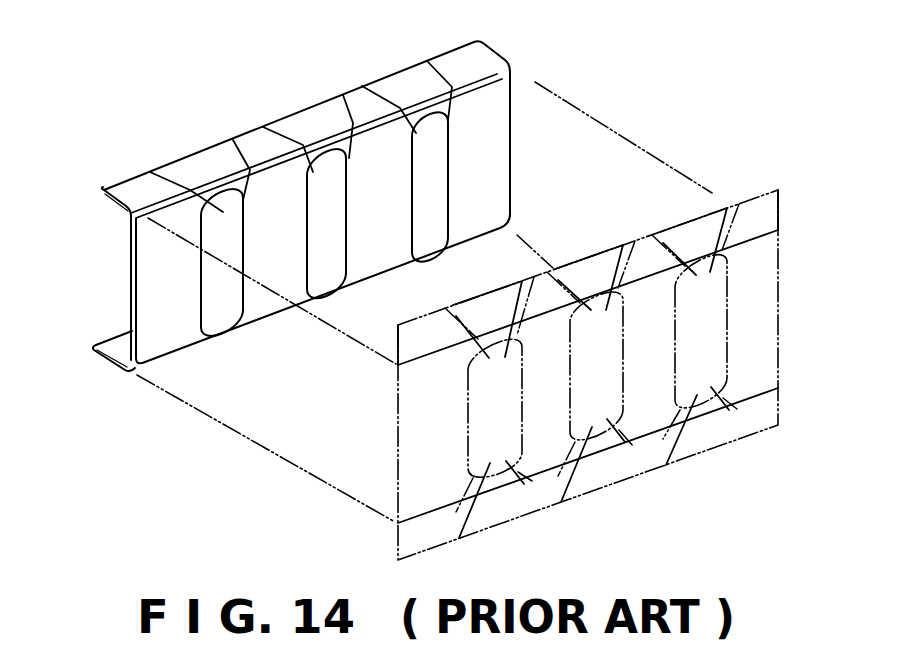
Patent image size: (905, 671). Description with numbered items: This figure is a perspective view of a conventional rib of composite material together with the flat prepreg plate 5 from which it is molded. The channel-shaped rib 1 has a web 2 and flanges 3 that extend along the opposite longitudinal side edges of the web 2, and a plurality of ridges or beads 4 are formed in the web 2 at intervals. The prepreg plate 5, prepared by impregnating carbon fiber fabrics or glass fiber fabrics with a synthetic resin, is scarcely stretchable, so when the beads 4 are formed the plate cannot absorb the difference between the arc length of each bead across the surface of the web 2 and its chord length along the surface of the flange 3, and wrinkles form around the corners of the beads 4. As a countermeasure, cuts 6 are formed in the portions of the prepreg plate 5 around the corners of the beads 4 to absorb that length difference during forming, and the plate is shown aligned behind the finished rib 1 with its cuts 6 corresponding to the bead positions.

The channel-shaped rib 1 is at (399, 62).
The web 2 is at (161, 335).
The flange 3 is at (201, 157).
The bead 4 is at (415, 190).
The prepreg plate 5 is at (788, 326).
The cut 6 is at (287, 140).